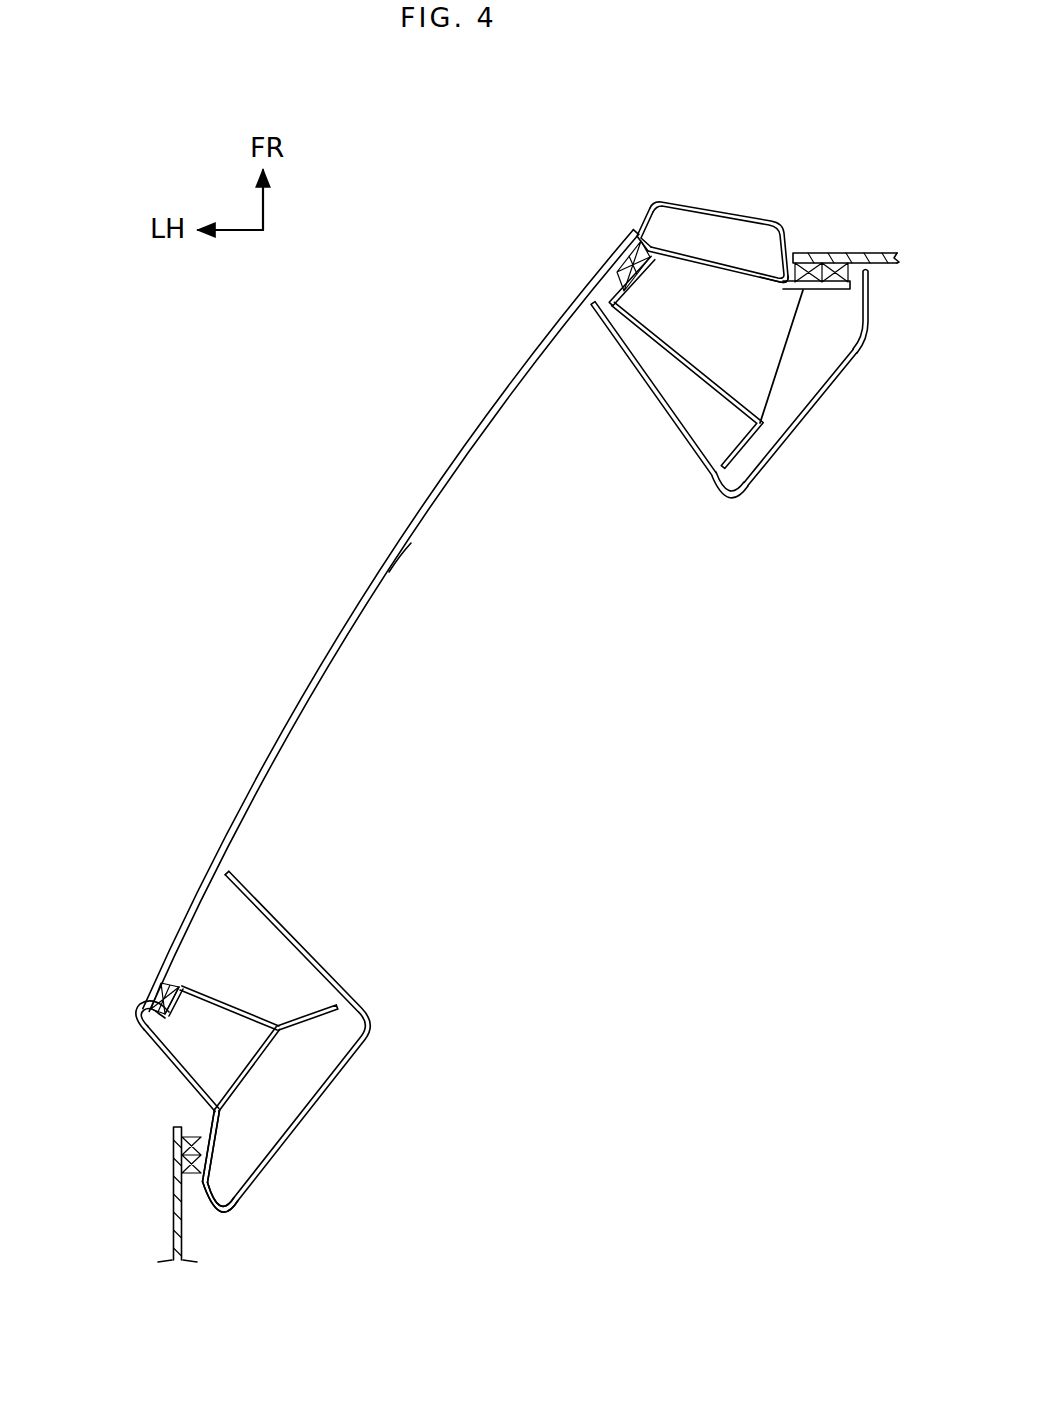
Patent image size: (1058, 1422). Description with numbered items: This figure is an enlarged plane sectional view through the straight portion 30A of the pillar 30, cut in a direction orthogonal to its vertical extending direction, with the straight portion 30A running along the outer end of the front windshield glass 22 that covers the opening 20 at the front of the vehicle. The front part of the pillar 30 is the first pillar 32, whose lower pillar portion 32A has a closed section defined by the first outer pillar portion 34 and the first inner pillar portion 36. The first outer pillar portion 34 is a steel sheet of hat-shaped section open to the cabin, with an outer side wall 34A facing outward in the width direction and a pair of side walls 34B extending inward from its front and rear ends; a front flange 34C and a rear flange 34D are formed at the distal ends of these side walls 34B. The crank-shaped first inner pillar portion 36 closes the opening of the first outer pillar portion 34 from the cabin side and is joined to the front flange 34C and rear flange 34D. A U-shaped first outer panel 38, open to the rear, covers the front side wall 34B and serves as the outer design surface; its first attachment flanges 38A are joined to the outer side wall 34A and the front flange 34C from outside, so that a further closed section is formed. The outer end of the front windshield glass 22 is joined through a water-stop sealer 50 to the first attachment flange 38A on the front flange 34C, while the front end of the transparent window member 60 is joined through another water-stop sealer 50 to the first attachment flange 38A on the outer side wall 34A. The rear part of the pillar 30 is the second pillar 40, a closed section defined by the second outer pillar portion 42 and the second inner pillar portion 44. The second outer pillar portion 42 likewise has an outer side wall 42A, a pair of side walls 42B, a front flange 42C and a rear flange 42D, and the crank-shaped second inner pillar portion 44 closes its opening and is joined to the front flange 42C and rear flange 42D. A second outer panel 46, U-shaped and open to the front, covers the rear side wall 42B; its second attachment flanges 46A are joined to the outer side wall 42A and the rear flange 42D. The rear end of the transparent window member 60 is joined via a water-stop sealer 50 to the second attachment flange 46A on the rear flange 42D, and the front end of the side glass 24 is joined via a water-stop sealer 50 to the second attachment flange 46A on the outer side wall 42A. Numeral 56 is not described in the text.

The opening 20 is at (860, 200).
The front windshield glass 22 is at (861, 252).
The side glass 24 is at (172, 1210).
The pillar 30 is at (672, 310).
The straight portion 30A is at (672, 310).
The first pillar 32 is at (696, 169).
The lower pillar portion 32A is at (696, 169).
The first outer pillar portion 34 is at (763, 410).
The outer side wall 34A is at (642, 288).
The side walls 34B is at (713, 390).
The front flange 34C is at (868, 305).
The rear flange 34D is at (728, 450).
The first inner pillar portion 36 is at (786, 365).
The first outer panel 38 is at (698, 204).
The first attachment flanges 38A is at (612, 284).
The second pillar 40 is at (219, 1083).
The second outer pillar portion 42 is at (221, 1075).
The outer side wall 42A is at (133, 1022).
The side walls 42B is at (238, 998).
The front flange 42C is at (320, 1005).
The rear flange 42D is at (230, 1210).
The second inner pillar portion 44 is at (250, 1077).
The second outer panel 46 is at (168, 1083).
The second attachment flanges 46A is at (175, 960).
The water-stop sealer 50 is at (632, 228).
The glass panel 56 is at (391, 621).
The transparent window member 60 is at (411, 543).